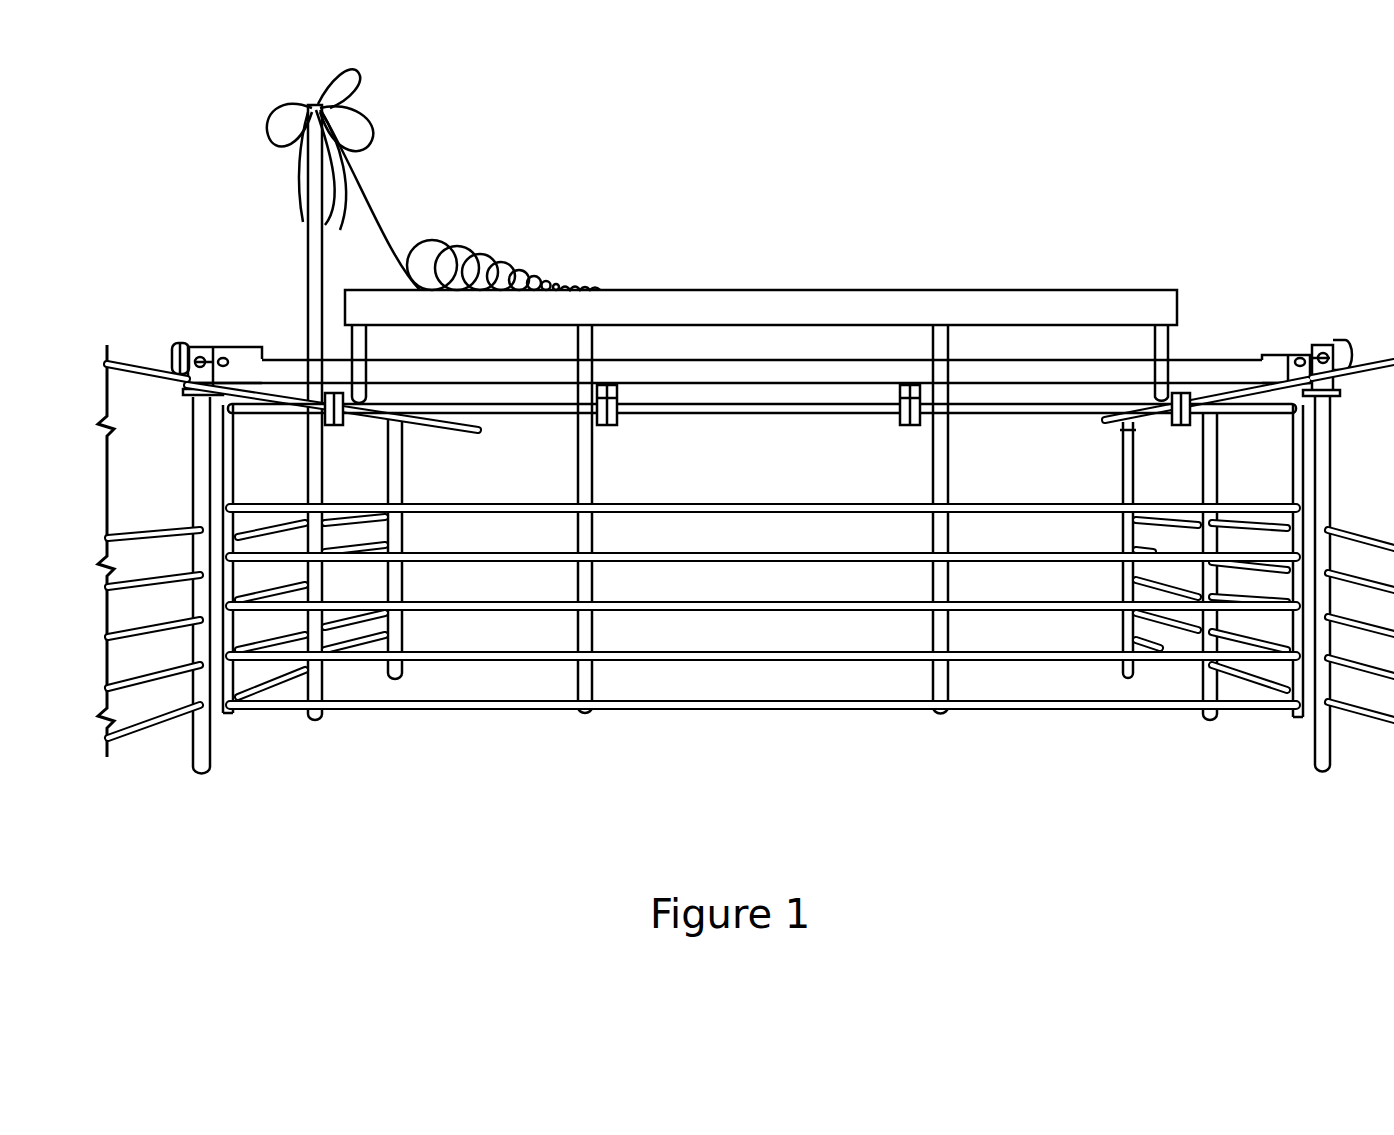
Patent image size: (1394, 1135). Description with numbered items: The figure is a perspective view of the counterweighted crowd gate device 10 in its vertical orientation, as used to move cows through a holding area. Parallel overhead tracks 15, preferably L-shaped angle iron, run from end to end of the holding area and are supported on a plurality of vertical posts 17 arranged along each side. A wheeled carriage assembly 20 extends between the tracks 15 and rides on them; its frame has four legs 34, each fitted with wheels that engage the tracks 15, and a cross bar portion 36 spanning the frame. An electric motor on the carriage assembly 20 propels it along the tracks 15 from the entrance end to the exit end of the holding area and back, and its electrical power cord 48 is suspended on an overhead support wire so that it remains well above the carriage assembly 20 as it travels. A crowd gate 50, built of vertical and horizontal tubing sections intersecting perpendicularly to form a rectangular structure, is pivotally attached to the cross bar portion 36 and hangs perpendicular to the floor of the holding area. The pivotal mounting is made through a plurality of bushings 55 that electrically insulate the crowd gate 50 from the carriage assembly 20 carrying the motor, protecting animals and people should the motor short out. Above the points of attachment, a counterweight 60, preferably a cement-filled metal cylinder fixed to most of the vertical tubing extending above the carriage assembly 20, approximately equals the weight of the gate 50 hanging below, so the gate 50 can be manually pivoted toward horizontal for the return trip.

The counterweighted crowd gate device 10 is at (746, 478).
The parallel overhead tracks 15 is at (153, 381).
The vertical posts 17 is at (398, 466).
The wheeled carriage assembly 20 is at (633, 265).
The legs 34 is at (242, 365).
The cross bar portion 36 is at (535, 368).
The electrical power cord 48 is at (522, 282).
The crowd gate 50 is at (580, 628).
The bushings 55 is at (340, 422).
The counterweight 60 is at (806, 310).